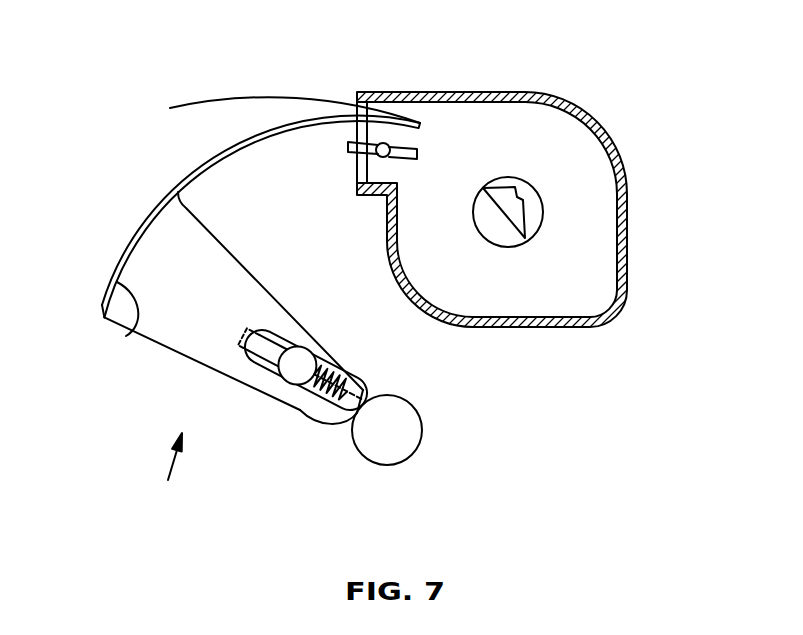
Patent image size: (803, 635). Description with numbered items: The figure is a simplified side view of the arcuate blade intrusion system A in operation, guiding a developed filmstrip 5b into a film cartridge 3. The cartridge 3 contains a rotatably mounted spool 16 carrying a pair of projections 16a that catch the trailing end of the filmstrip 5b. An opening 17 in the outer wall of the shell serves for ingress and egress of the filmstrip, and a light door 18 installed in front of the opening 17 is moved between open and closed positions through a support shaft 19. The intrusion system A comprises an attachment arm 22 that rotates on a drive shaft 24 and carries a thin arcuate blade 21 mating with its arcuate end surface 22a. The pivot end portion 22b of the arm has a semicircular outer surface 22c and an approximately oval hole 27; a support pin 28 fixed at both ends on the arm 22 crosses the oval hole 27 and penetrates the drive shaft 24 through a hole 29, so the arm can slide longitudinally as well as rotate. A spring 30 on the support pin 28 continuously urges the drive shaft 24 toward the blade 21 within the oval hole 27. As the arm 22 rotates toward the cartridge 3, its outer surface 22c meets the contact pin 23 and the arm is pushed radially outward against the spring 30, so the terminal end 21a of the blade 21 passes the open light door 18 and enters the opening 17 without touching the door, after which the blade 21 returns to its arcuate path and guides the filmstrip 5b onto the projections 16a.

The film cartridge 3 is at (592, 124).
The developed filmstrip 5b is at (227, 98).
The spool 16 is at (497, 228).
The projections 16a is at (518, 192).
The opening 17 is at (352, 136).
The light door 18 is at (372, 152).
The support shaft 19 is at (386, 160).
The arcuate blade 21 is at (204, 166).
The terminal end 21a is at (364, 118).
The attachment arm 22 is at (186, 337).
The end surface 22a is at (126, 336).
The pivot end portion 22b is at (317, 413).
The outer surface 22c is at (337, 418).
The contact pin 23 is at (396, 415).
The drive shaft 24 is at (295, 383).
The oval hole 27 is at (264, 378).
The support pin 28 is at (270, 343).
The hole 29 is at (300, 358).
The spring 30 is at (346, 392).
The arcuate blade intrusion system A is at (148, 487).